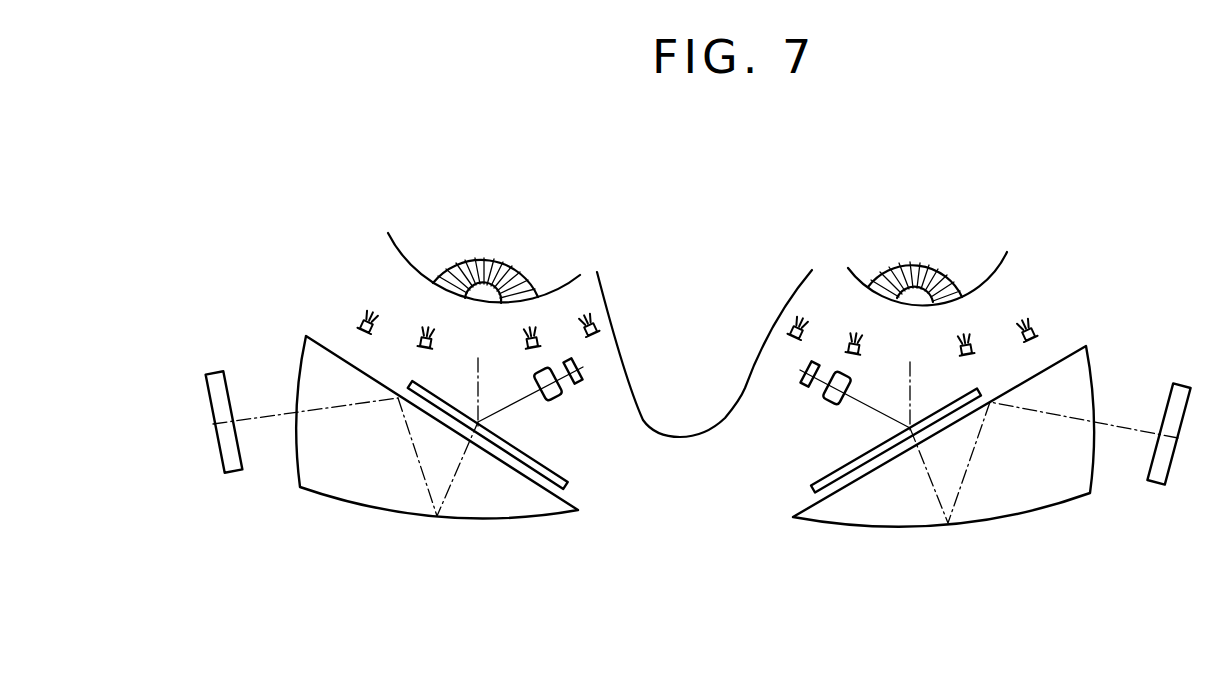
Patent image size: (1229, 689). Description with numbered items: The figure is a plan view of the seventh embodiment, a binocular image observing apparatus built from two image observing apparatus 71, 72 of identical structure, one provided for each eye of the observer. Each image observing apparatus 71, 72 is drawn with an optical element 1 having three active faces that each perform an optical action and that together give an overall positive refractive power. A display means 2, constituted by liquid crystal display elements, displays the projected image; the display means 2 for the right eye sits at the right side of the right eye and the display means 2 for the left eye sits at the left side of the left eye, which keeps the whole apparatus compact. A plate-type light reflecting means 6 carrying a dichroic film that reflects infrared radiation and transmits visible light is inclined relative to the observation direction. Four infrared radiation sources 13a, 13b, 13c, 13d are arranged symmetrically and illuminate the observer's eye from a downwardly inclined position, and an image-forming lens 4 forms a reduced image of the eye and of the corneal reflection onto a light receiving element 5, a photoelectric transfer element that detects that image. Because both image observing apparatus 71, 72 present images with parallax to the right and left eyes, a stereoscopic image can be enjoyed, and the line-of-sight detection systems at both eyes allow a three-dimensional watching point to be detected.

The optical element 1 is at (323, 487).
The display means 2 is at (235, 468).
The image-forming lens 4 is at (552, 399).
The light receiving element 5 is at (582, 381).
The light reflecting means 6 is at (568, 476).
The infrared radiation source 13a is at (603, 335).
The infrared radiation source 13b is at (535, 352).
The infrared radiation source 13c is at (414, 345).
The infrared radiation source 13d is at (356, 331).
The image observing apparatus 71 is at (451, 418).
The image observing apparatus 72 is at (1128, 553).